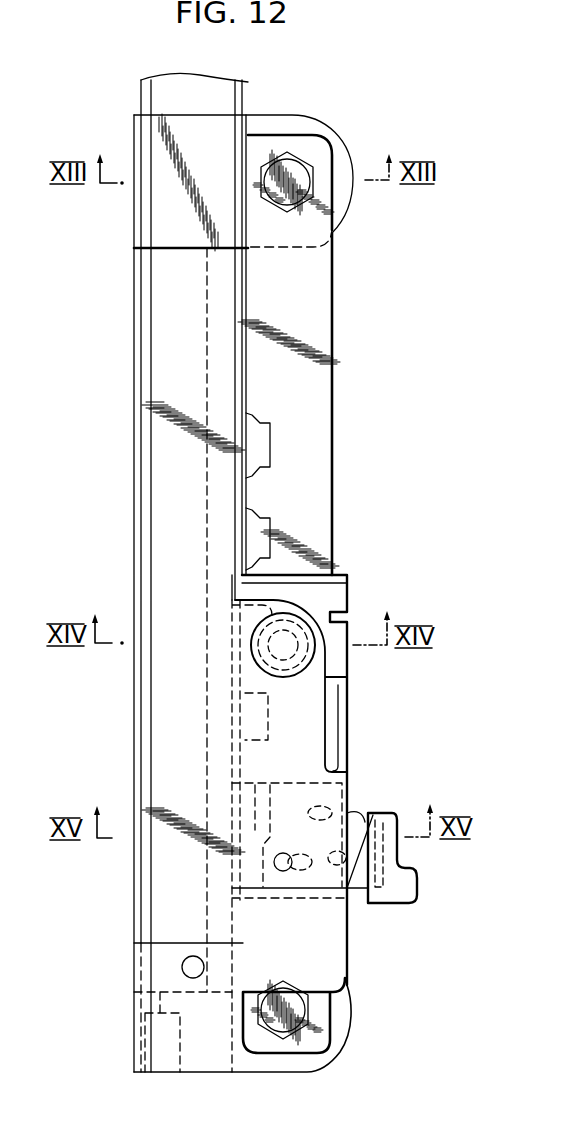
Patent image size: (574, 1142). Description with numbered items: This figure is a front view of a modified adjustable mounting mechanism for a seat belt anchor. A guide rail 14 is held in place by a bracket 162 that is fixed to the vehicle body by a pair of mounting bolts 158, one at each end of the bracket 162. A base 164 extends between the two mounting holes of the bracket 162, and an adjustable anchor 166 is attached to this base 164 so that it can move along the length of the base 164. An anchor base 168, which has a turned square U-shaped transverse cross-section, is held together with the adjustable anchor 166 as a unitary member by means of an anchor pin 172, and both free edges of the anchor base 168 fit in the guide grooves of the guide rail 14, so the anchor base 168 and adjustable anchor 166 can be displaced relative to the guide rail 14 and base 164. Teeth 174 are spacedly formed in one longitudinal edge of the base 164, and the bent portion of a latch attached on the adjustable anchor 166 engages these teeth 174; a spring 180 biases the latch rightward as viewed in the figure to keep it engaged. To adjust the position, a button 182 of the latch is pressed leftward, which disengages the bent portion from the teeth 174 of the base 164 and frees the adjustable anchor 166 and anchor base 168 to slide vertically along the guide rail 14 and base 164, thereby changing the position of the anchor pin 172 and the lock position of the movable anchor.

The guide rail 14 is at (162, 507).
The mounting bolts 158 is at (305, 187).
The bracket 162 is at (285, 125).
The base 164 is at (320, 450).
The adjustable anchor 166 is at (342, 593).
The anchor base 168 is at (313, 932).
The anchor pin 172 is at (262, 647).
The teeth 174 is at (270, 495).
The spring 180 is at (358, 828).
The button 182 is at (395, 870).